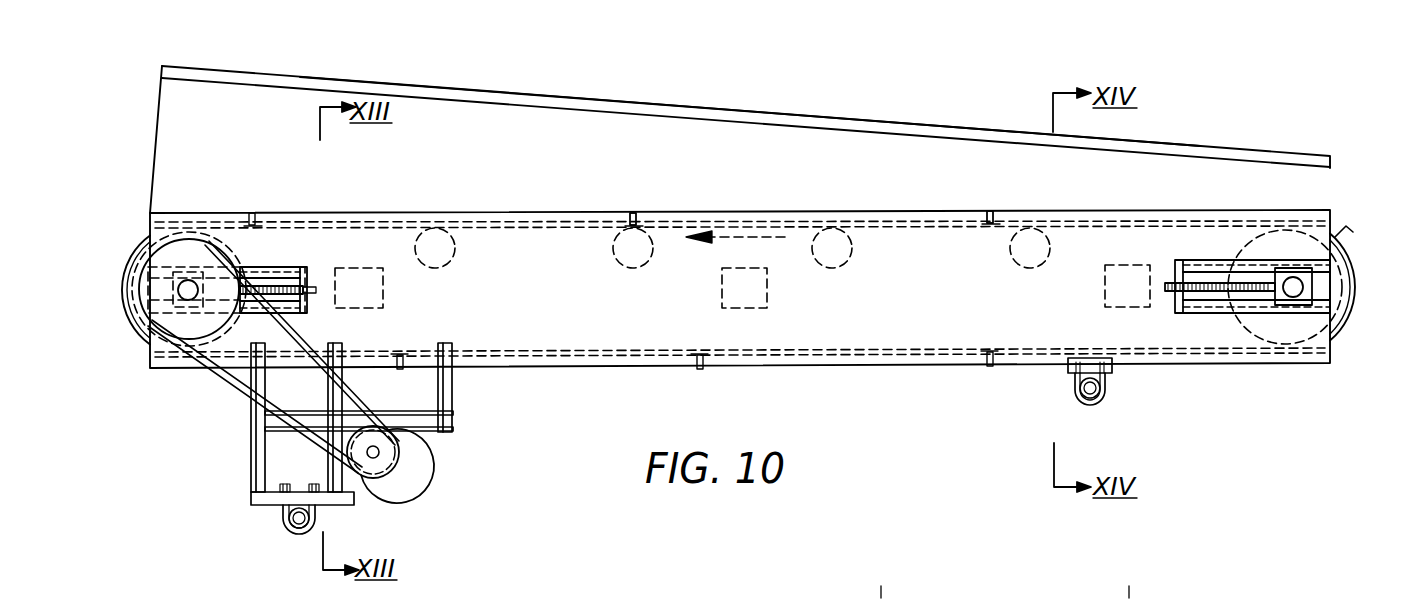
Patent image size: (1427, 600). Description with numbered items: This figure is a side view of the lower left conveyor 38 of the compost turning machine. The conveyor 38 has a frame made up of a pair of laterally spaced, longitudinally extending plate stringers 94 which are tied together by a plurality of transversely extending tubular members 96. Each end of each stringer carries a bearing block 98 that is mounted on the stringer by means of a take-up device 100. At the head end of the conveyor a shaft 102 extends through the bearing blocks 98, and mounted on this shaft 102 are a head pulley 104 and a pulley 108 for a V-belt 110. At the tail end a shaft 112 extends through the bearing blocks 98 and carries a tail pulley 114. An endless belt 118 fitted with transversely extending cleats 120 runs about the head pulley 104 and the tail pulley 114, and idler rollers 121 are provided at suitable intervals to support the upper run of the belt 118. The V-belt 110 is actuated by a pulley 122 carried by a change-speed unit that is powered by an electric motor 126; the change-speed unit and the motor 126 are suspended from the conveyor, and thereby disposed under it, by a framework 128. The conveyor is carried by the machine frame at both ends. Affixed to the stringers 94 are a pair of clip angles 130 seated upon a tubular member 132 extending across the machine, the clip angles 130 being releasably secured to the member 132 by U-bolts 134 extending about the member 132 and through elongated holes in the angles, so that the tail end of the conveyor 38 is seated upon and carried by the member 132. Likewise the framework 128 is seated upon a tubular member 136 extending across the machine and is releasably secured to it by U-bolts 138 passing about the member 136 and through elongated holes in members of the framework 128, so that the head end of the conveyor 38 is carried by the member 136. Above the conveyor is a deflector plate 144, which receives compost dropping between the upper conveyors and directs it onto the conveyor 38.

The conveyor 38 is at (858, 380).
The plate stringers 94 is at (886, 304).
The tubular members 96 is at (384, 292).
The bearing block 98 is at (150, 336).
The take-up device 100 is at (276, 284).
The shaft 102 is at (187, 290).
The head pulley 104 is at (138, 256).
The pulley 108 is at (187, 246).
The V-belt 110 is at (243, 394).
The shaft 112 is at (1295, 288).
The tail pulley 114 is at (1338, 273).
The endless belt 118 is at (583, 207).
The cleats 120 is at (990, 210).
The idler rollers 121 is at (616, 265).
The pulley 122 is at (387, 450).
The electric motor 126 is at (420, 472).
The framework 128 is at (258, 467).
The clip angles 130 is at (1068, 366).
The tubular member 132 is at (1083, 400).
The U-bolts 134 is at (1112, 383).
The tubular member 136 is at (298, 526).
The U-bolts 138 is at (283, 507).
The deflector plate 144 is at (862, 105).